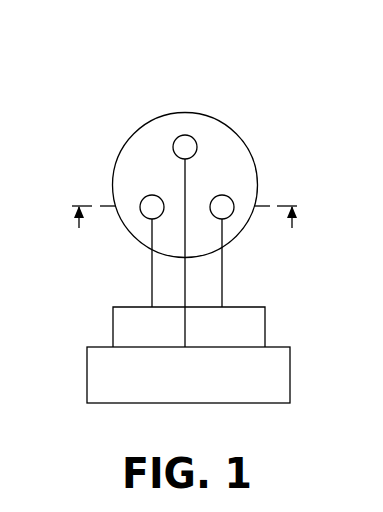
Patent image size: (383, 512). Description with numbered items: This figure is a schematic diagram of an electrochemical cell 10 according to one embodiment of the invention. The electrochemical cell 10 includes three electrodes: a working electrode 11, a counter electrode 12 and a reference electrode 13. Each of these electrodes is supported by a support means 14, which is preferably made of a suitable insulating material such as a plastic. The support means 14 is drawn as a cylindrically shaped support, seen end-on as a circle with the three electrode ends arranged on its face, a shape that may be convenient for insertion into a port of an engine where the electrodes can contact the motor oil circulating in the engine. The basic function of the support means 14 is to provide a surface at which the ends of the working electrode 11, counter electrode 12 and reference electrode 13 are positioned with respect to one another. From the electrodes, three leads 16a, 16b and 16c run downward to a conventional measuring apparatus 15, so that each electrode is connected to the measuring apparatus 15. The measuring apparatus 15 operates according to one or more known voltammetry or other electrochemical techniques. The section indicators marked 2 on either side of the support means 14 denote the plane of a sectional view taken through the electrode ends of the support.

The electrochemical cell 10 is at (237, 105).
The support means 14 is at (245, 138).
The reference electrode 13 is at (185, 135).
The working electrode 11 is at (145, 215).
The counter electrode 12 is at (233, 193).
The lead 16a is at (113, 318).
The lead 16b is at (265, 323).
The lead 16c is at (186, 331).
The measuring apparatus 15 is at (190, 398).
The section line II-II 2 is at (187, 208).